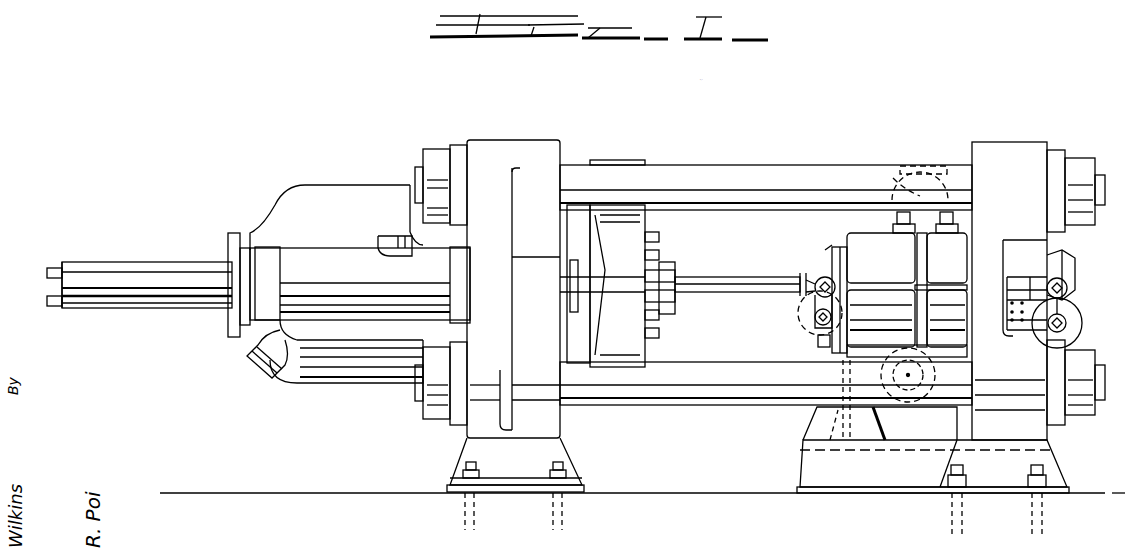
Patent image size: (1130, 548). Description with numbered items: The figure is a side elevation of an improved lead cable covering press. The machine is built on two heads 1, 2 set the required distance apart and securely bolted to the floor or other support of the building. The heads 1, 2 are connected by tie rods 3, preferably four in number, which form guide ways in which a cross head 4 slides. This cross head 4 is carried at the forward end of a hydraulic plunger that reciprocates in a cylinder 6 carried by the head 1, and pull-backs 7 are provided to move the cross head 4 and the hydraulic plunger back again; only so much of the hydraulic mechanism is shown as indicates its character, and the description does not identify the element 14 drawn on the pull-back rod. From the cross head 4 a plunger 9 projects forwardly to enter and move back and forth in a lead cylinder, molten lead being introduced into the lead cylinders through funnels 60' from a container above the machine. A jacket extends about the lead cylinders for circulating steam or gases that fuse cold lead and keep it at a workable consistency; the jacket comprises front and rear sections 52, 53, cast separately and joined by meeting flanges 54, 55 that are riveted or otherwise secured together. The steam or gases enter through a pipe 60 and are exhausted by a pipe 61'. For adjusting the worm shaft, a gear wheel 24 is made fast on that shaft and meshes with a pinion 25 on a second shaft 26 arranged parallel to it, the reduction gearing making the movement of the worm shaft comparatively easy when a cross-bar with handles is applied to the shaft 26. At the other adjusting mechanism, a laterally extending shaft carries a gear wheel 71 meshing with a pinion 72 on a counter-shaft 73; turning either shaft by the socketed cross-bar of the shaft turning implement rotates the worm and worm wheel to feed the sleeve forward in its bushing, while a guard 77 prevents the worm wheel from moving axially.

The head 1 is at (512, 150).
The head 2 is at (1003, 148).
The tie rods 3 is at (688, 173).
The cross head 4 is at (605, 215).
The cylinder 6 is at (298, 203).
The pull-backs 7 is at (78, 272).
The plunger 9 is at (710, 280).
The piston rod 14 is at (130, 266).
The gear wheel 24 is at (805, 326).
The pinion 25 is at (818, 282).
The second shaft 26 is at (812, 300).
The front section 52 is at (955, 246).
The rear section 53 is at (881, 290).
The meeting flange 54 is at (947, 290).
The meeting flange 55 is at (880, 240).
The pipe 60 is at (920, 154).
The funnels 60' is at (822, 184).
The pipe 61' is at (908, 392).
The gear wheel 71 is at (1072, 328).
The pinion 72 is at (1068, 286).
The counter-shaft 73 is at (1068, 298).
The guard 77 is at (1070, 258).